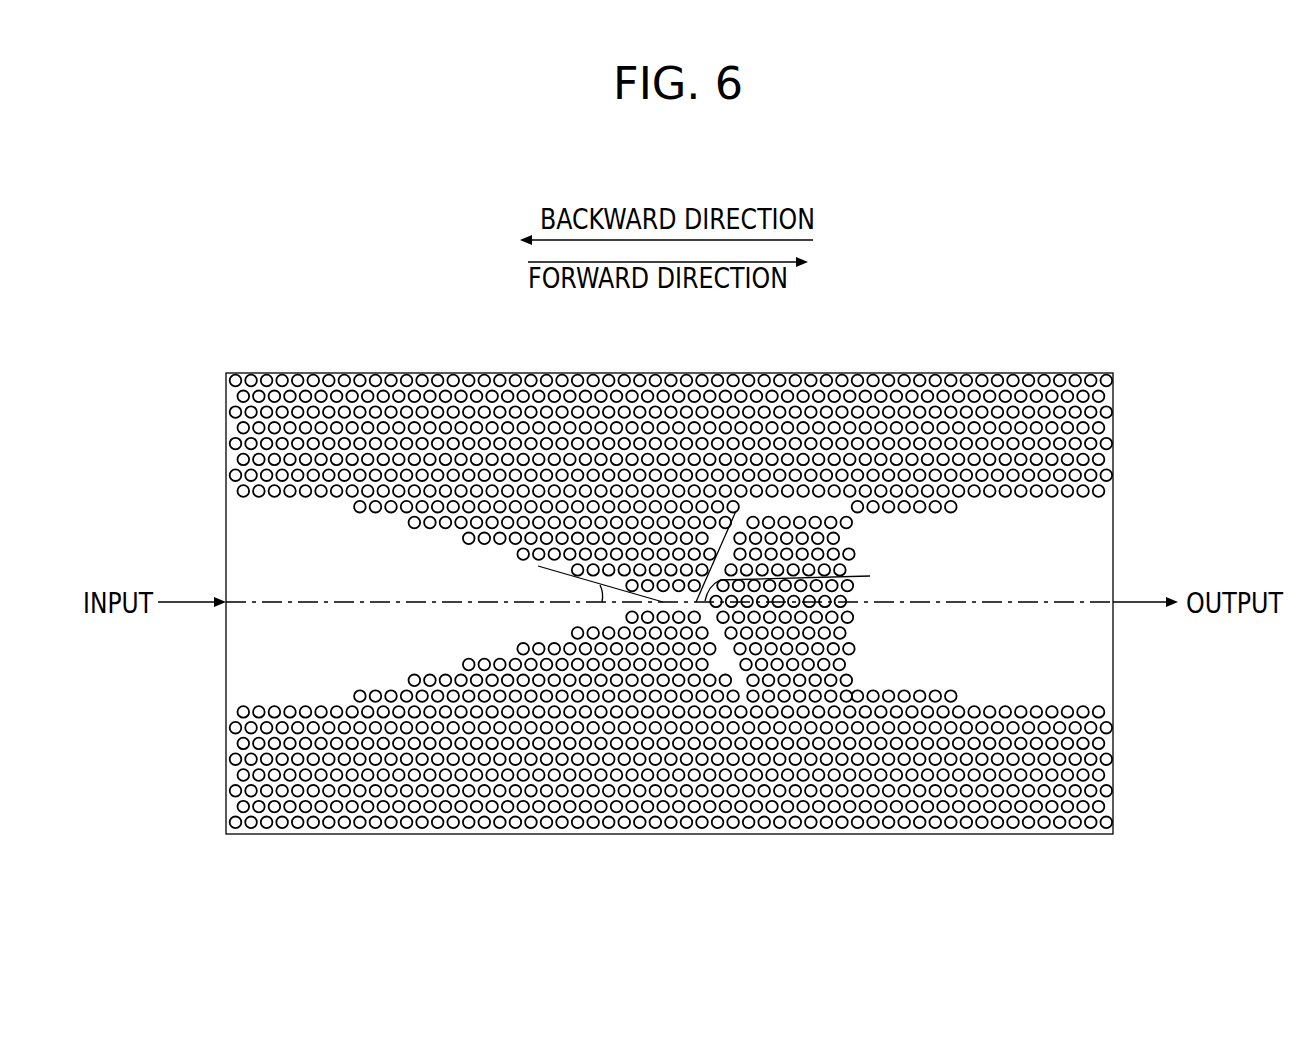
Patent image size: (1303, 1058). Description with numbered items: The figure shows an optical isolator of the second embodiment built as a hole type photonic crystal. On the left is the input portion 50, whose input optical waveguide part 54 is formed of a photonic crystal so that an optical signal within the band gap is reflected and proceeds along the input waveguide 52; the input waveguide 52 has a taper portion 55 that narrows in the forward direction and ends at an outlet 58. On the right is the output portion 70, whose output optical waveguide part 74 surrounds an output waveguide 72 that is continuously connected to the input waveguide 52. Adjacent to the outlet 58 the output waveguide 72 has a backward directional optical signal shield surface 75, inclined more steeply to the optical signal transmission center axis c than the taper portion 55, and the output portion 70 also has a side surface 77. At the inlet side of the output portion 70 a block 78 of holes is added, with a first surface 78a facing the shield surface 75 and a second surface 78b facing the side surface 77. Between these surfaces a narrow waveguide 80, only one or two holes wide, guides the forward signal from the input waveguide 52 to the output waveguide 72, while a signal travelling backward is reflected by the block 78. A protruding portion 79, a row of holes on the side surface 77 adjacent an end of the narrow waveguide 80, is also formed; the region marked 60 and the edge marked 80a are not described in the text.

The input portion 50 is at (610, 364).
The input waveguide 52 is at (290, 636).
The input optical waveguide part 54 is at (228, 402).
The taper portion 55 is at (425, 525).
The outlet 58 is at (623, 598).
The wedge region 60 is at (646, 590).
The output portion 70 is at (1100, 364).
The output waveguide 72 is at (1055, 655).
The output optical waveguide part 74 is at (1098, 436).
The backward directional optical signal shield surface 75 is at (710, 648).
The side surface 77 is at (1015, 492).
The block 78 is at (794, 684).
The first surface 78a is at (728, 503).
The second surface 78b is at (794, 512).
The protruding portion 79 is at (902, 508).
The narrow waveguide 80 is at (767, 690).
The block edge 80a is at (843, 517).
The optical signal transmission center axis c is at (1075, 592).